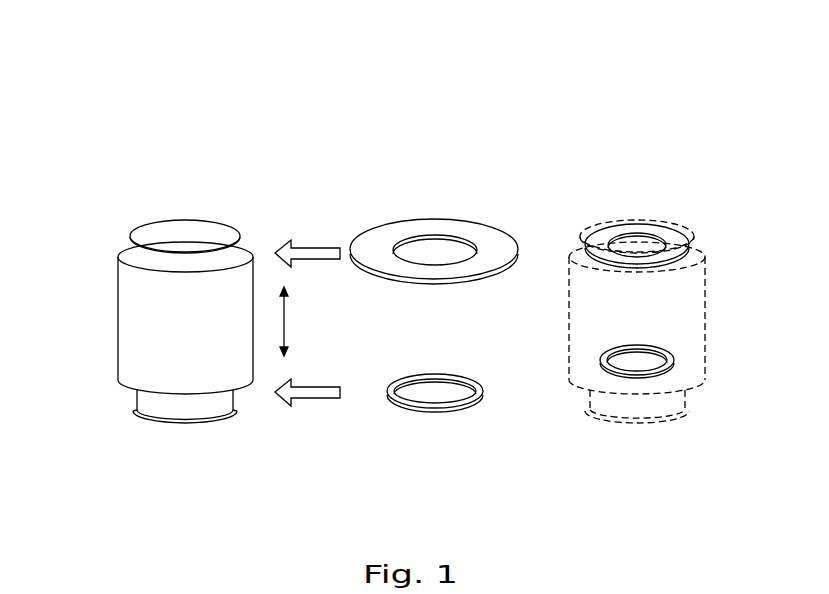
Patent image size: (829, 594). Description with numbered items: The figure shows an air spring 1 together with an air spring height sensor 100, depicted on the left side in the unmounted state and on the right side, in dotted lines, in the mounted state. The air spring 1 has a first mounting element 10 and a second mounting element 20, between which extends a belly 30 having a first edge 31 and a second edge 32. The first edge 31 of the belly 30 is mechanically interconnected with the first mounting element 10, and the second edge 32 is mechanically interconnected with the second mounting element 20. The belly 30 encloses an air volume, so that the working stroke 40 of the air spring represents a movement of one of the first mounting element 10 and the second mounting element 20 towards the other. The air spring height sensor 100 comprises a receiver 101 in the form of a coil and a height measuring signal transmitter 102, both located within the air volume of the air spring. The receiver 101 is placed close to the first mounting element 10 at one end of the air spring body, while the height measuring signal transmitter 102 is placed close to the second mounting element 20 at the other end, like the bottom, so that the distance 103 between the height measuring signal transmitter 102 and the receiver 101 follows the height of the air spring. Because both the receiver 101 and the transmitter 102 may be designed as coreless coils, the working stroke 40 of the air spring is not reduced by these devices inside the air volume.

The air spring height sensor 100 is at (407, 72).
The air spring 1 is at (86, 280).
The first mounting element 10 is at (185, 232).
The second mounting element 20 is at (222, 420).
The belly 30 is at (118, 335).
The first edge 31 is at (118, 245).
The second edge 32 is at (125, 385).
The working stroke 40 is at (286, 310).
The receiver 101 is at (487, 238).
The height measuring signal transmitter 102 is at (455, 410).
The distance between height measuring signal transmitter and receiver 103 is at (528, 402).